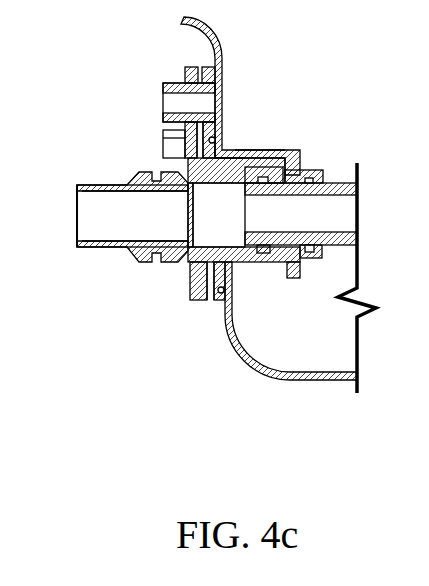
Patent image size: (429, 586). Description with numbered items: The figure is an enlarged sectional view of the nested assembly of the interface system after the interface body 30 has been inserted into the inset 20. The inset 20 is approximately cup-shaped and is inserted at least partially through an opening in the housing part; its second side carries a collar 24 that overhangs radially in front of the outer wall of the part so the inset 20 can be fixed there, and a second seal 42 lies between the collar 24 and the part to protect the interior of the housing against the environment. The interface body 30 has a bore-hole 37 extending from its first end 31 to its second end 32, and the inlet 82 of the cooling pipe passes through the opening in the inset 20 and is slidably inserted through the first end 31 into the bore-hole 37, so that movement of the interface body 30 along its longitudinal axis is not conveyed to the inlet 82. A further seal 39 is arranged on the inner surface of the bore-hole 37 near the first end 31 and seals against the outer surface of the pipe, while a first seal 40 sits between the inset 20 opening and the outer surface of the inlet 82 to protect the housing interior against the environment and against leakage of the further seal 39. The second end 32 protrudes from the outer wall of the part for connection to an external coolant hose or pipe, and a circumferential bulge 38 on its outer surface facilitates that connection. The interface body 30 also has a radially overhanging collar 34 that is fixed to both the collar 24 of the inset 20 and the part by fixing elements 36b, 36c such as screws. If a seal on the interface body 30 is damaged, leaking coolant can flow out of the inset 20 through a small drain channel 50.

The inset 20 is at (290, 152).
The collar 24 is at (223, 48).
The interface body 30 is at (107, 249).
The first end 31 is at (309, 176).
The second end 32 is at (76, 186).
The collar 34 is at (189, 67).
The fixing element 36b is at (163, 139).
The fixing element 36c is at (163, 90).
The bore-hole 37 is at (99, 208).
The circumferential bulge 38 is at (143, 264).
The further seal 39 is at (263, 150).
The first seal 40 is at (340, 183).
The second seal 42 is at (219, 149).
The drain channel 50 is at (212, 302).
The inlet 82 is at (341, 247).